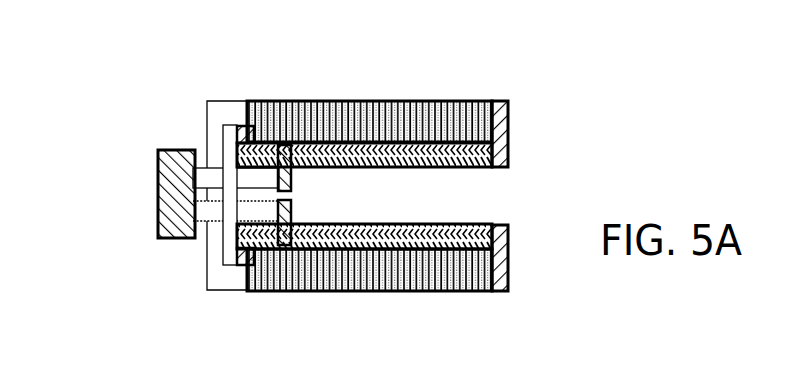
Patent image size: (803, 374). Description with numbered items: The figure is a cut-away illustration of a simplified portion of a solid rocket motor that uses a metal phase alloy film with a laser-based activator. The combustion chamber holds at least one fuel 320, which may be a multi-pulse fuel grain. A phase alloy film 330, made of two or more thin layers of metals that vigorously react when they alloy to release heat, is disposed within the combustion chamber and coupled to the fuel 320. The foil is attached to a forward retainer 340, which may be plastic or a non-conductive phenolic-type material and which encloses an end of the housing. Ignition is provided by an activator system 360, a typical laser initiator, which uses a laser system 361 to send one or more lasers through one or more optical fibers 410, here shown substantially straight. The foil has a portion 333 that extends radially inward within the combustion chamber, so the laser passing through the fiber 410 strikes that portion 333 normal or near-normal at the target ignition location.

The fuel 320 is at (368, 128).
The phase alloy film 330 is at (365, 252).
The radially inward-extending portion of the foil 333 is at (293, 170).
The forward retainer 340 is at (232, 125).
The activator system 360 is at (131, 158).
The laser system 361 is at (178, 240).
The optical fiber 410 is at (292, 210).